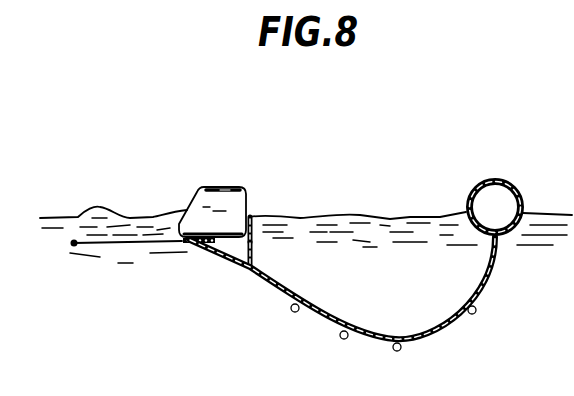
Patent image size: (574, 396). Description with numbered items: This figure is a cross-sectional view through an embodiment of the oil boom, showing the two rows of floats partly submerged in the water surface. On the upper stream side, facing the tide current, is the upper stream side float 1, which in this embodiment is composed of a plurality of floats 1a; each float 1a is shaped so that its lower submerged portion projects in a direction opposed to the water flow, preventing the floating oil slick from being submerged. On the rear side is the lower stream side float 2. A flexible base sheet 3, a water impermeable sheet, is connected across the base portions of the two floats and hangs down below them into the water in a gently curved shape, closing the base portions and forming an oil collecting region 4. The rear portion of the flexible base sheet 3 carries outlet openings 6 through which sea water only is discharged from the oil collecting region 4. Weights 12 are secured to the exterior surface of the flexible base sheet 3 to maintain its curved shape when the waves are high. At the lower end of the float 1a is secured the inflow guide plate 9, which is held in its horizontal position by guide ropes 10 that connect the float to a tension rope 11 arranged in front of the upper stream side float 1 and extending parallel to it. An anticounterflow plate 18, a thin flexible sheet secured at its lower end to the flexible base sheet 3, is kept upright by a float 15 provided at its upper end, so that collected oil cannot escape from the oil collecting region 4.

The upper stream side float 1 is at (203, 184).
The float 1a is at (240, 188).
The lower stream side float 2 is at (518, 189).
The flexible base sheet 3 is at (490, 265).
The oil collecting region 4 is at (397, 238).
The outlet openings 6 is at (433, 330).
The inflow guide plate 9 is at (200, 243).
The guide ropes 10 is at (150, 243).
The tension rope 11 is at (76, 240).
The weights 12 is at (477, 311).
The float 15 is at (251, 217).
The anticounterflow plate 18 is at (251, 243).